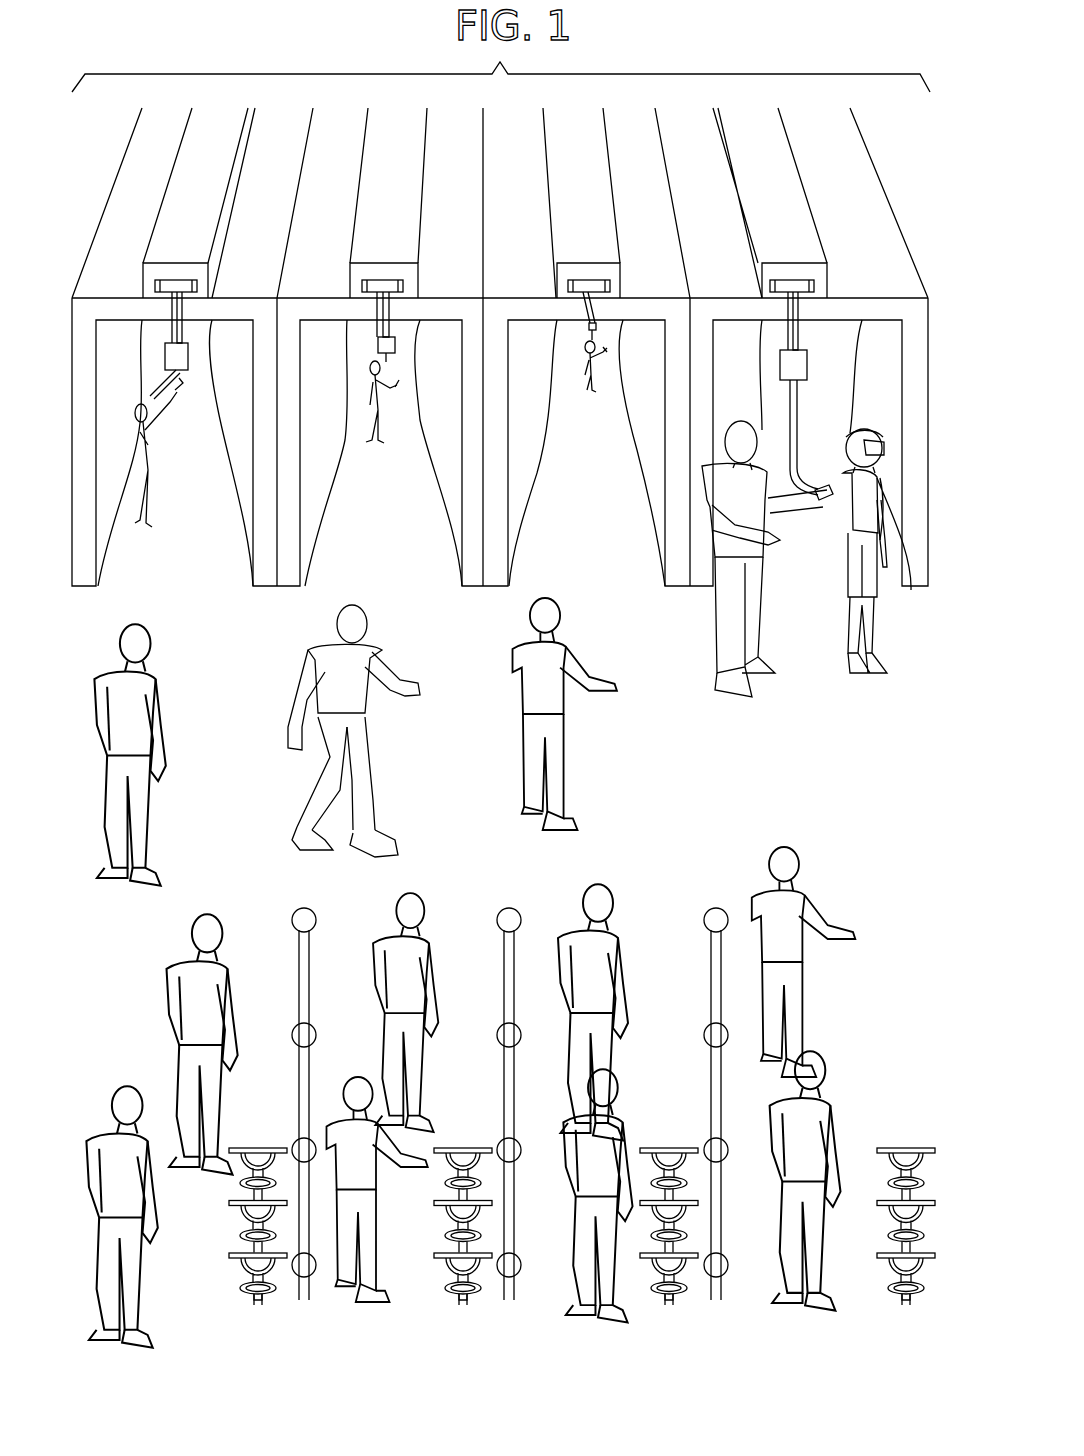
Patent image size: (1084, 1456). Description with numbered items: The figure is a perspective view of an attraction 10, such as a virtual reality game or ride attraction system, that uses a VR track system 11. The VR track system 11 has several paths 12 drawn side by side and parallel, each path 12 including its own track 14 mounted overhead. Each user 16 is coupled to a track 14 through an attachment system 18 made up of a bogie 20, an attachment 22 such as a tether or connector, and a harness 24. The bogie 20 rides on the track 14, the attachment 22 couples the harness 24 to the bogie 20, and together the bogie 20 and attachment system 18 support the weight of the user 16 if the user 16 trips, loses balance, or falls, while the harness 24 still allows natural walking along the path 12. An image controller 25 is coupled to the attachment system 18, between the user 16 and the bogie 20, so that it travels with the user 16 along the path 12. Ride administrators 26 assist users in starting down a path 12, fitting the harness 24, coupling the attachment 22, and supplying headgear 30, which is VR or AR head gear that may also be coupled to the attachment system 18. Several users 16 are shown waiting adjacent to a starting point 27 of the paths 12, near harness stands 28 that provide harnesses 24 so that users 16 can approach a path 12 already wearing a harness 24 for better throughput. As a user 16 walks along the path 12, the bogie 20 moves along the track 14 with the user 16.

The attraction 10 is at (822, 750).
The VR track system 11 is at (912, 178).
The path 12 is at (163, 577).
The track 14 is at (225, 278).
The user 16 is at (156, 478).
The attachment system 18 is at (188, 390).
The bogie 20 is at (163, 284).
The attachment 22 is at (150, 393).
The harness 24 is at (912, 592).
The image controller 25 is at (188, 360).
The ride administrator 26 is at (172, 790).
The starting point 27 is at (742, 805).
The harness stand 28 is at (277, 1137).
The headgear 30 is at (846, 436).